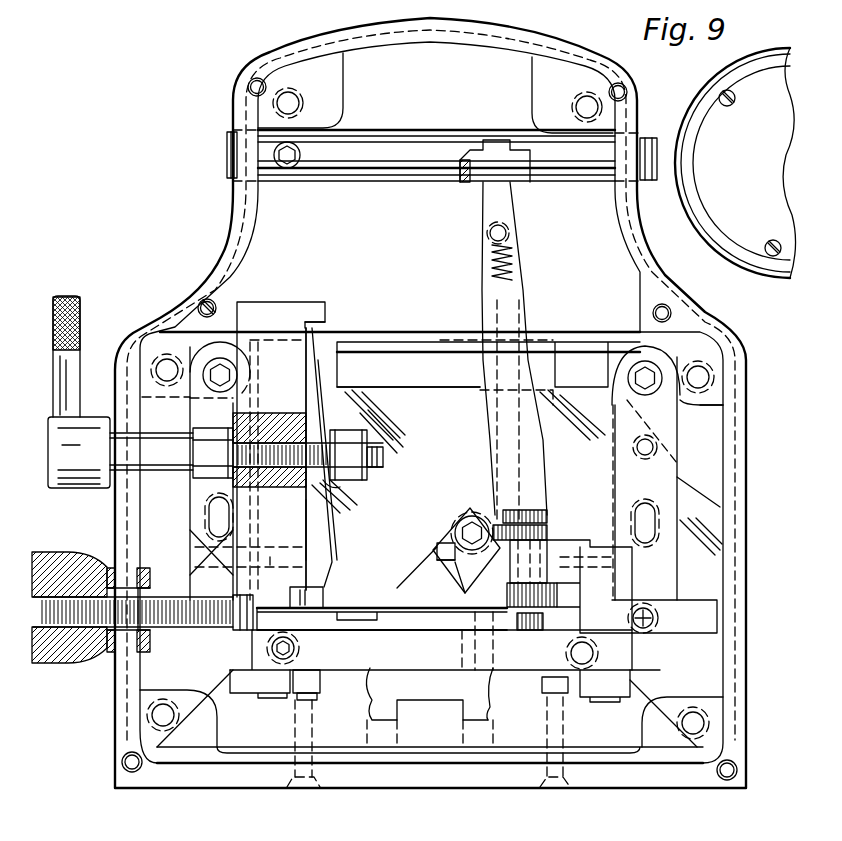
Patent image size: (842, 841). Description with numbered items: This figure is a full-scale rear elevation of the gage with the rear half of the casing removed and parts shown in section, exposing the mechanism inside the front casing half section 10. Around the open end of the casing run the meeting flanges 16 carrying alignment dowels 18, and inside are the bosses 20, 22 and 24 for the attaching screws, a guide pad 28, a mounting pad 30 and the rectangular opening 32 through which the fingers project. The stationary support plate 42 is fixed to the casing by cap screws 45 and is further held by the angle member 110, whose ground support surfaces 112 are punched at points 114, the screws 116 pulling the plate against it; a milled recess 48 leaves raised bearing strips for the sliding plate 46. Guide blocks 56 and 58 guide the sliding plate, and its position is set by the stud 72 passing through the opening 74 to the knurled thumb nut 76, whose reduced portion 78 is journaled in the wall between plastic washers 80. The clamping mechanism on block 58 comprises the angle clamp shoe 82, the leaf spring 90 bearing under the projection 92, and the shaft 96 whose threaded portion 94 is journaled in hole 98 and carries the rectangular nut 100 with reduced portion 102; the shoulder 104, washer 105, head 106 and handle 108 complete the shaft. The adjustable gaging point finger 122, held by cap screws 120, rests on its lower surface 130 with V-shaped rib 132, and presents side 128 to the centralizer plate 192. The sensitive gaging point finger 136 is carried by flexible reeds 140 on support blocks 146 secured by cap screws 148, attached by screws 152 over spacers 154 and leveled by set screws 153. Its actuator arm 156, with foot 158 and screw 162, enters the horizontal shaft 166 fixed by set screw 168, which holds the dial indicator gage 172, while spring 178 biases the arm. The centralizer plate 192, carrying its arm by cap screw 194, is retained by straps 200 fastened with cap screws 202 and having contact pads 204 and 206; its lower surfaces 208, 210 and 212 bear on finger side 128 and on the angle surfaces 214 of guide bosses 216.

The front casing half section 10 is at (672, 789).
The meeting flanges 16 is at (710, 320).
The alignment dowels 18 is at (248, 86).
The internal boss 20 is at (168, 384).
The internal boss 22 is at (688, 400).
The internal boss 24 is at (343, 80).
The internal guide pad 28 is at (338, 376).
The mounting pad 30 is at (490, 697).
The rectangular opening 32 is at (450, 353).
The stationary support plate 42 is at (440, 672).
The countersunk head cap screws 45 is at (268, 650).
The sliding plate 46 is at (713, 643).
The central recess 48 is at (382, 636).
The guide block 56 is at (634, 658).
The guide block 58 is at (277, 302).
The screw threaded stud 72 is at (160, 628).
The opening 74 is at (127, 648).
The knurled thumb nut 76 is at (38, 668).
The reduced intermediate portion 78 is at (125, 580).
The plastic washers 80 is at (112, 568).
The angle clamp shoe 82 is at (305, 521).
The formed leaf spring 90 is at (322, 418).
The projection 92 is at (320, 322).
The screw threaded end portion 94 is at (383, 457).
The shaft 96 is at (182, 477).
The hole 98 is at (251, 480).
The rectangular nut 100 is at (367, 478).
The rectangular reduced portion 102 is at (333, 488).
The shoulder 104 is at (233, 430).
The plastic washer 105 is at (255, 420).
The head 106 is at (48, 440).
The handle 108 is at (81, 320).
The angle member 110 is at (322, 678).
The support surfaces 112 is at (295, 697).
The punched points 114 is at (313, 703).
The countersunk head screws 116 is at (312, 740).
The cap screws 120 is at (447, 542).
The adjustable gaging point finger 122 is at (448, 552).
The side 128 is at (445, 545).
The lower horizontal surface 130 is at (405, 568).
The V-shaped rib 132 is at (472, 660).
The sensitive gaging point finger 136 is at (548, 533).
The flexible reeds 140 is at (425, 618).
The support blocks 146 is at (365, 640).
The cap screws 148 is at (323, 590).
The screws 152 is at (545, 620).
The round end set screws 153 is at (462, 655).
The spacers 154 is at (555, 590).
The actuator arm 156 is at (524, 289).
The foot portion 158 is at (548, 517).
The attaching screw 162 is at (500, 512).
The horizontal shaft 166 is at (590, 185).
The set screw 168 is at (287, 168).
The dial indicator gage 172 is at (703, 243).
The spring 178 is at (512, 262).
The centralizer plate 192 is at (440, 389).
The cap screw 194 is at (465, 515).
The straps 200 is at (190, 497).
The cap screws 202 is at (212, 360).
The extruded contact pad 204 is at (645, 456).
The extruded contact pad 206 is at (661, 497).
The flat surface 208 is at (690, 548).
The central flat surface 210 is at (455, 562).
The flat surface 212 is at (270, 560).
The angle surfaces 214 is at (235, 552).
The guide bosses 216 is at (192, 575).